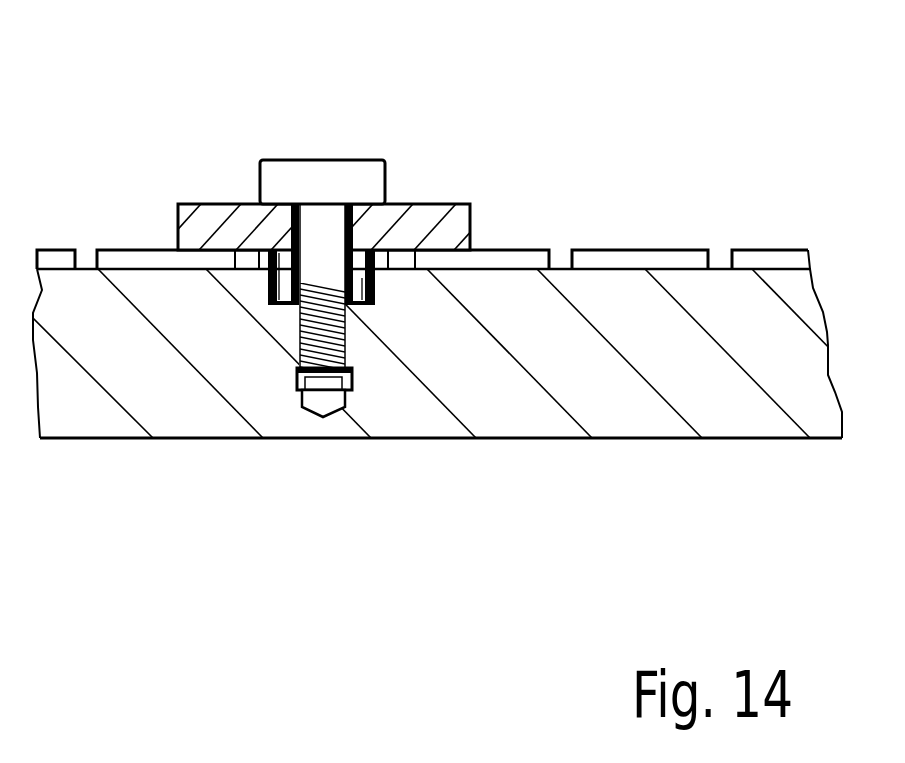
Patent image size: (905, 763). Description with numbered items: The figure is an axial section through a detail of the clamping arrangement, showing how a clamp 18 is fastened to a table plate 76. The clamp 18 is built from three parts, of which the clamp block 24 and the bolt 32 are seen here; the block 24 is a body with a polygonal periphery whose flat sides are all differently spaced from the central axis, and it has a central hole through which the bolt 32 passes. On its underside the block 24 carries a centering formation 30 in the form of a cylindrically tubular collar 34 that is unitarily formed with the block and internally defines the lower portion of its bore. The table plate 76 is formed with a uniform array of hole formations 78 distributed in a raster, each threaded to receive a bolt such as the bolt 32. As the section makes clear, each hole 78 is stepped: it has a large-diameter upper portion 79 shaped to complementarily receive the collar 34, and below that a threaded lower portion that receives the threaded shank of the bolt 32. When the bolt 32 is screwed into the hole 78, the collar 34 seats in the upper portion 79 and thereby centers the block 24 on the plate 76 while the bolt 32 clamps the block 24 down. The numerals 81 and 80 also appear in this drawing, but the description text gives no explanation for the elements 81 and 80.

The clamp 18 is at (207, 160).
The bolt 32 is at (325, 183).
The sleeve 81 is at (358, 241).
The clamp block 24 is at (433, 213).
The large-diameter upper portion 79 is at (374, 294).
The centering formation 30 is at (268, 296).
The hole formation 78 is at (280, 363).
The lower nut element 80 is at (352, 344).
The collar 34 is at (366, 304).
The table plate 76 is at (736, 411).